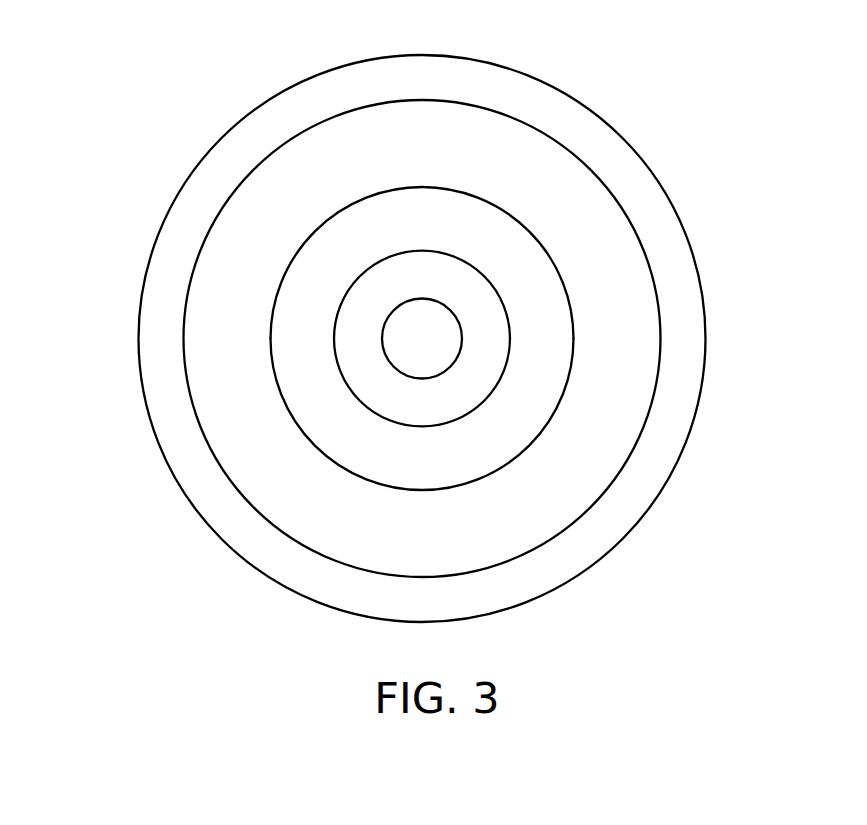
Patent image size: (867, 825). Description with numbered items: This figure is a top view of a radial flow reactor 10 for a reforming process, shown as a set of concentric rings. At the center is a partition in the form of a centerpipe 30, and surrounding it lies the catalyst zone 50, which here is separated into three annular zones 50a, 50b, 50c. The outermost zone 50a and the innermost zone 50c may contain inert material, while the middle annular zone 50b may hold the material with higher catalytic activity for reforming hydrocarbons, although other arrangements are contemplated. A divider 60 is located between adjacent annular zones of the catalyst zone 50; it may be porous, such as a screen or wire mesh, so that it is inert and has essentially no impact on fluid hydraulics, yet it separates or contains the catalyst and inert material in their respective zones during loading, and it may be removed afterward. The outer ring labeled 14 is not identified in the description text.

The radial flow reactor 10 is at (695, 129).
The outer jacket 14 is at (670, 250).
The centerpipe 30 is at (385, 327).
The catalyst zone 50 is at (601, 418).
The outermost annular zone 50a is at (415, 132).
The middle annular zone 50b is at (387, 235).
The innermost annular zone 50c is at (395, 288).
The divider 60 is at (335, 367).